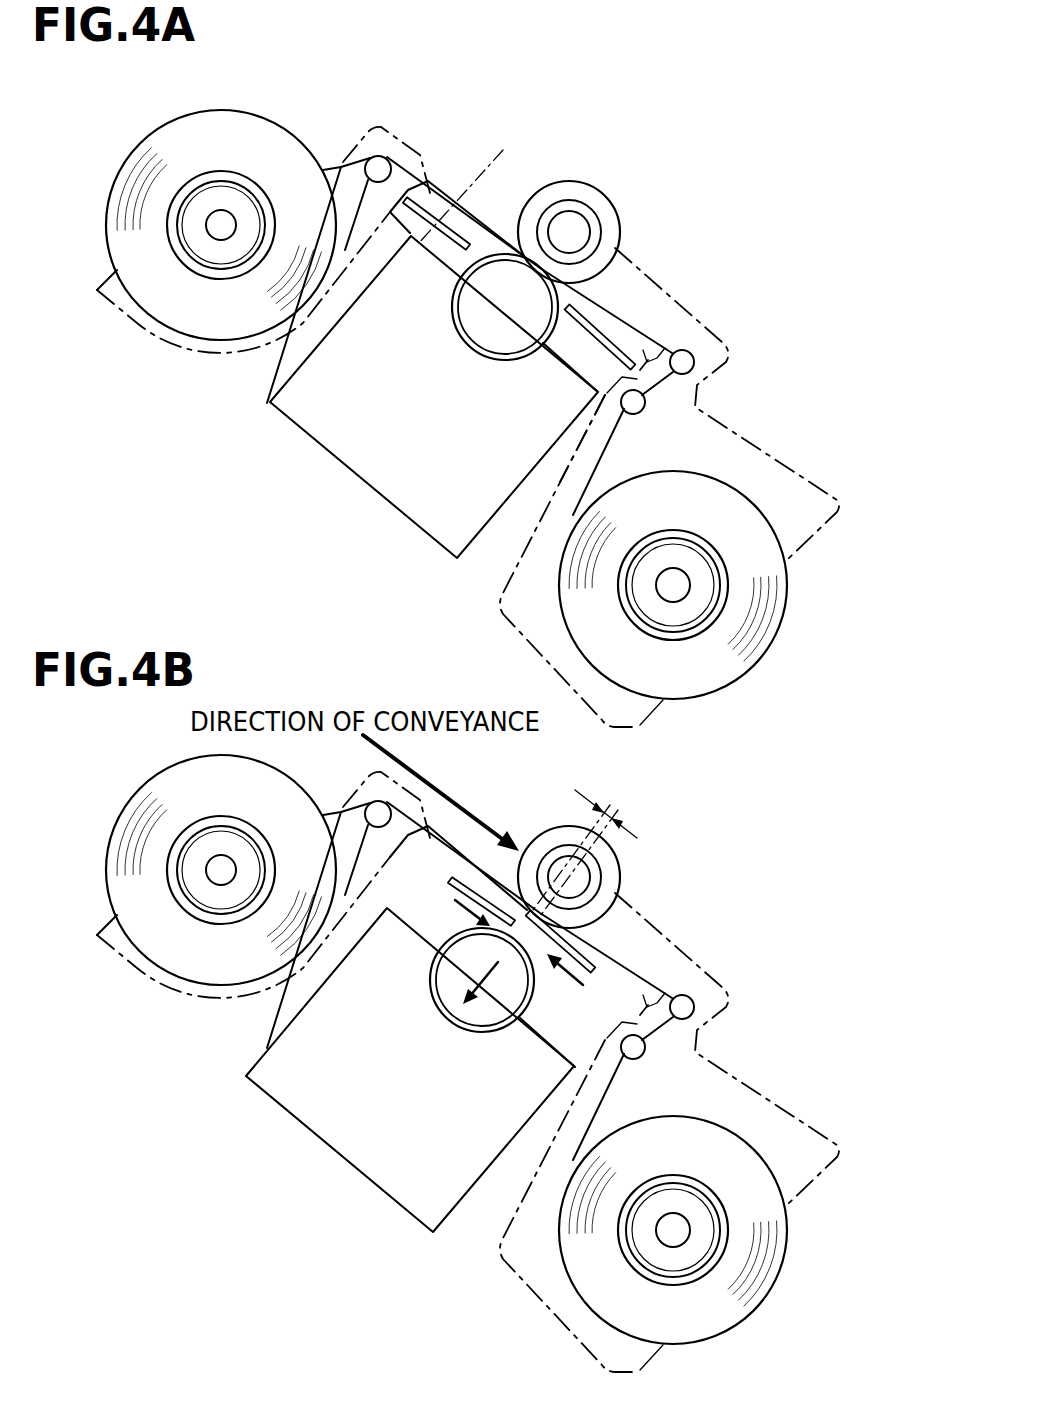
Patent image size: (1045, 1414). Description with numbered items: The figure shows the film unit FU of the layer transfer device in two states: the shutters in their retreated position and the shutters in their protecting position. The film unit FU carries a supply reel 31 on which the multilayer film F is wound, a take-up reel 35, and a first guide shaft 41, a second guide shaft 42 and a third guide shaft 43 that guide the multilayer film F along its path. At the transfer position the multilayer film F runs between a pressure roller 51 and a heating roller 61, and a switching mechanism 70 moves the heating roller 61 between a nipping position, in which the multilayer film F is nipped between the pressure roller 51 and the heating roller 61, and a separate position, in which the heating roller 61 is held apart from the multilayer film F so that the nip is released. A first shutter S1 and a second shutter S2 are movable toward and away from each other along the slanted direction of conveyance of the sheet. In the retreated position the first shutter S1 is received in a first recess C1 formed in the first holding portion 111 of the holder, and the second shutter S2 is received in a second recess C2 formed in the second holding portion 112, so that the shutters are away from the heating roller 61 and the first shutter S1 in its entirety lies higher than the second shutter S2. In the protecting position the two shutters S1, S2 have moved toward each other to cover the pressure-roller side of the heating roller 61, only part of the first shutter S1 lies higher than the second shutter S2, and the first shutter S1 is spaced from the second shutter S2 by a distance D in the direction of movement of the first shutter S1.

In FIG. 4A, the supply reel 31 is at (207, 250).
In FIG. 4B, the supply reel 31 is at (233, 900).
In FIG. 4A, the take-up reel 35 is at (693, 610).
In FIG. 4B, the take-up reel 35 is at (673, 1249).
In FIG. 4A, the first guide shaft 41 is at (375, 158).
In FIG. 4B, the first guide shaft 41 is at (362, 781).
In FIG. 4A, the second guide shaft 42 is at (694, 363).
In FIG. 4B, the second guide shaft 42 is at (723, 1013).
In FIG. 4A, the third guide shaft 43 is at (645, 403).
In FIG. 4B, the third guide shaft 43 is at (687, 1049).
In FIG. 4A, the pressure roller 51 is at (578, 180).
In FIG. 4B, the pressure roller 51 is at (620, 862).
In FIG. 4A, the heating roller 61 is at (492, 362).
In FIG. 4B, the heating roller 61 is at (480, 1033).
In FIG. 4A, the switching mechanism 70 is at (403, 518).
In FIG. 4B, the switching mechanism 70 is at (368, 1183).
In FIG. 4A, the first holding portion 111 is at (376, 277).
In FIG. 4B, the first holding portion 111 is at (470, 953).
In FIG. 4A, the second holding portion 112 is at (557, 483).
In FIG. 4A, the first shutter S1 is at (463, 237).
In FIG. 4B, the first shutter S1 is at (463, 878).
In FIG. 4A, the second shutter S2 is at (605, 332).
In FIG. 4B, the second shutter S2 is at (603, 955).
In FIG. 4A, the first recess C1 is at (420, 184).
In FIG. 4B, the first recess C1 is at (426, 808).
In FIG. 4A, the second recess C2 is at (702, 324).
In FIG. 4B, the second recess C2 is at (726, 948).
In FIG. 4A, the multilayer film F is at (661, 331).
In FIG. 4B, the multilayer film F is at (684, 945).
In FIG. 4A, the film unit FU is at (140, 336).
In FIG. 4B, the film unit FU is at (102, 1031).
In FIG. 4B, the distance D is at (610, 814).